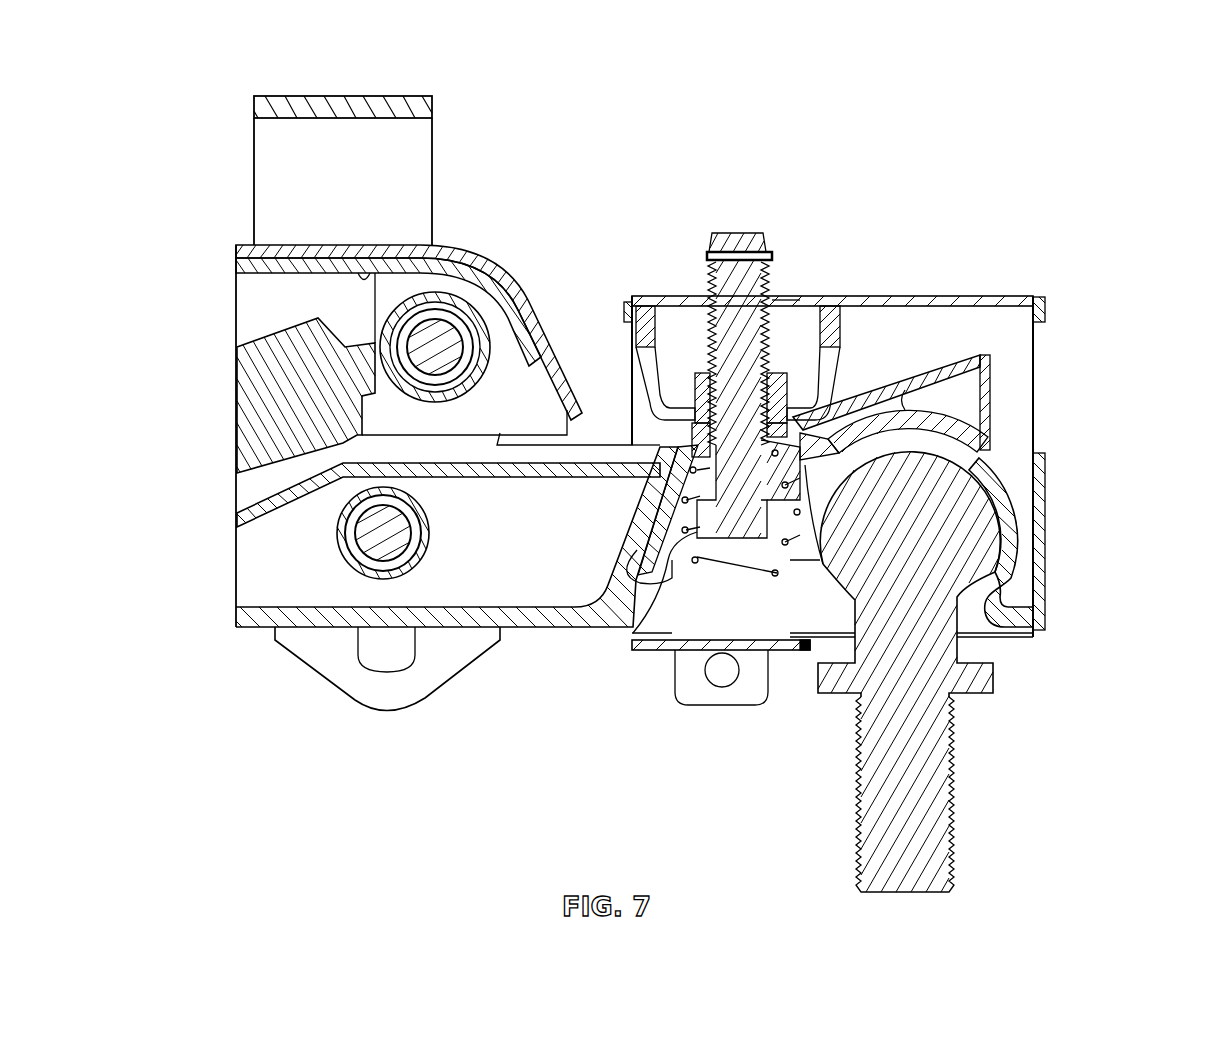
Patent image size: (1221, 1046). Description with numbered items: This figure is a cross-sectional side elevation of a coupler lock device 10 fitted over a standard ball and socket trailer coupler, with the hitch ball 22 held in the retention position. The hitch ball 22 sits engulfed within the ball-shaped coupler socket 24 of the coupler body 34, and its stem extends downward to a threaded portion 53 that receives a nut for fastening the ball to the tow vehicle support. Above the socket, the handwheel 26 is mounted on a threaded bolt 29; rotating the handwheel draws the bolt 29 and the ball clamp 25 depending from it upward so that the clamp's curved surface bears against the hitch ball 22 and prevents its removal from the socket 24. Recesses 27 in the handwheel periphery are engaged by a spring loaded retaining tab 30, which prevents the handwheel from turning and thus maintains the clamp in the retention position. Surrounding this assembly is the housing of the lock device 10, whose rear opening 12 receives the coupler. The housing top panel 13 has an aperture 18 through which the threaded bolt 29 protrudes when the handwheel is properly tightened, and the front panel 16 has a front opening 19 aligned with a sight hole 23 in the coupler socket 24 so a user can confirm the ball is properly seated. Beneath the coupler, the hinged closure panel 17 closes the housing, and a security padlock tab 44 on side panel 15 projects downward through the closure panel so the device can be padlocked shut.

The coupler lock device 10 is at (992, 248).
The rear opening 12 is at (980, 318).
The top panel 13 is at (650, 345).
The side panel 15 is at (637, 438).
The front panel 16 is at (1048, 548).
The hinged closure panel 17 is at (663, 647).
The aperture 18 is at (742, 290).
The front opening 19 is at (1033, 352).
The hitch ball 22 is at (893, 537).
The sight hole 23 is at (980, 450).
The coupler socket 24 is at (950, 433).
The ball clamp 25 is at (640, 617).
The handwheel 26 is at (782, 322).
The recesses 27 is at (676, 395).
The threaded bolt 29 is at (791, 312).
The spring loaded retaining tab 30 is at (923, 377).
The coupler body 34 is at (527, 555).
The security padlock tab 44 is at (697, 690).
The threaded portion 53 is at (948, 820).